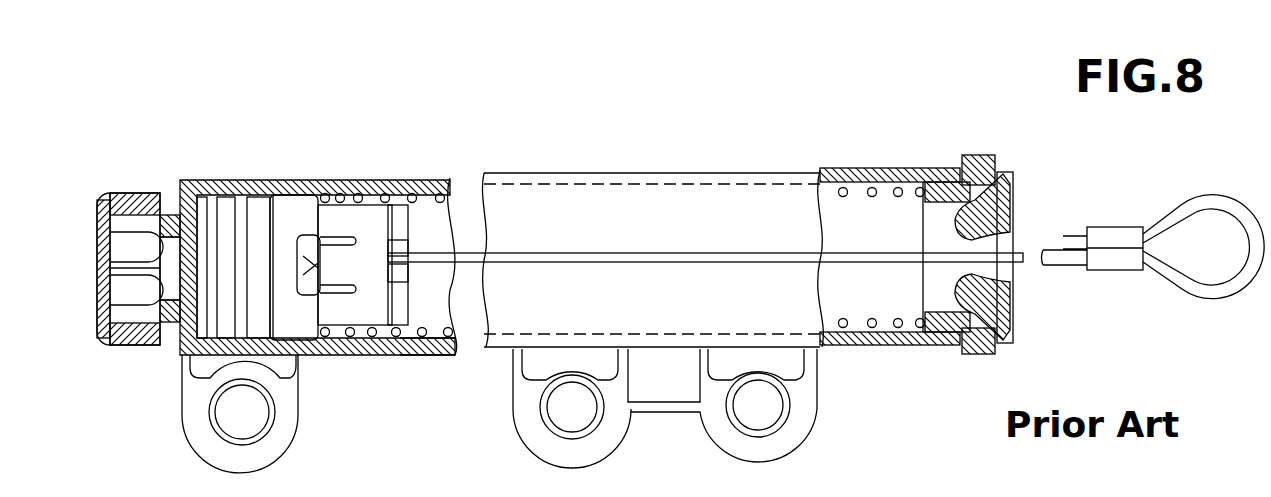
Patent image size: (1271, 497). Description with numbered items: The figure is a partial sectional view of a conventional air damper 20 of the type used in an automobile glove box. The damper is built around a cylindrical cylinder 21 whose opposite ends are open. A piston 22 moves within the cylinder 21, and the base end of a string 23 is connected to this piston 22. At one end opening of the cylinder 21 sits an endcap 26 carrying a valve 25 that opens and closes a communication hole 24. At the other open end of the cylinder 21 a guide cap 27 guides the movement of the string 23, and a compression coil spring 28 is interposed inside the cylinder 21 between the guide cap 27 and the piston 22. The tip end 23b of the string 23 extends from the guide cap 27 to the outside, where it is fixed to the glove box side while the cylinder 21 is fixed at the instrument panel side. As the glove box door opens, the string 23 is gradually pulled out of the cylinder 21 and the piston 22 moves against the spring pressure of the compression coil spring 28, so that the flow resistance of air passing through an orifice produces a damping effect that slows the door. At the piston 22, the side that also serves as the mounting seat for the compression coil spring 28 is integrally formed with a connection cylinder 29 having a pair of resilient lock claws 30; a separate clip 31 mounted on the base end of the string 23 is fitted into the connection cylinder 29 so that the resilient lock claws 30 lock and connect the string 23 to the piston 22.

The air damper 20 is at (672, 166).
The cylindrical cylinder 21 is at (608, 192).
The piston 22 is at (270, 200).
The string 23 is at (888, 263).
The tip end 23b is at (1213, 300).
The communication hole 24 is at (168, 178).
The valve 25 is at (114, 278).
The endcap 26 is at (103, 238).
The guide cap 27 is at (1005, 162).
The compression coil spring 28 is at (447, 346).
The connection cylinder 29 is at (355, 215).
The resilient lock claws 30 is at (345, 290).
The clip 31 is at (398, 205).